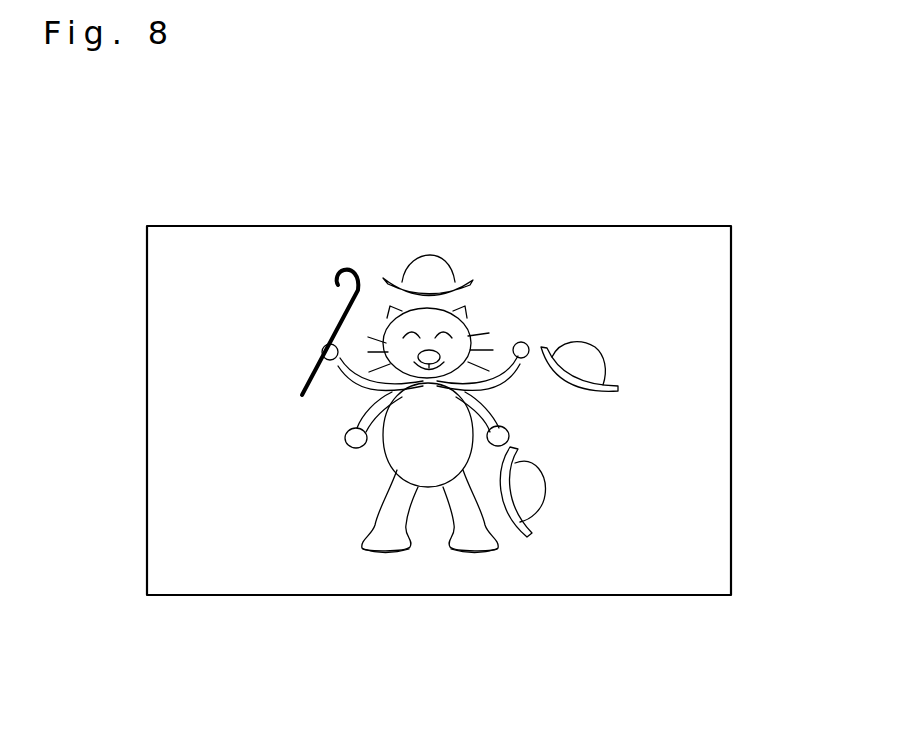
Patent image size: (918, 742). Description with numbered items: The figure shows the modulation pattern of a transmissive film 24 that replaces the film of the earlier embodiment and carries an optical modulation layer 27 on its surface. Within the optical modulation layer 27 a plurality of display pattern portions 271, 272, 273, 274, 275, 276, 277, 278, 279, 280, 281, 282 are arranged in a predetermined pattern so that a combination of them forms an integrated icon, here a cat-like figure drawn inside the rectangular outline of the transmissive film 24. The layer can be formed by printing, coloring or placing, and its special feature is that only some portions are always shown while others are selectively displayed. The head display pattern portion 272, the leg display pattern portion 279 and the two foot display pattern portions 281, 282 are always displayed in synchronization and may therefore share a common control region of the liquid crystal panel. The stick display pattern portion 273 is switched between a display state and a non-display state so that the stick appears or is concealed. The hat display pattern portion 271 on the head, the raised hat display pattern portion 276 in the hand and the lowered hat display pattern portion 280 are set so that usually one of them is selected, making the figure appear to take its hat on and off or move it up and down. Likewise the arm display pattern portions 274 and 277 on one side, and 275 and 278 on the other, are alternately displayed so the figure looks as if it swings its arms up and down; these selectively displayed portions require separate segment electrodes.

The transmissive film 24 is at (731, 388).
The optical modulation layer 27 is at (472, 256).
The display pattern portion 271 is at (420, 253).
The display pattern portion 272 is at (477, 322).
The display pattern portion 273 is at (340, 306).
The display pattern portion 274 is at (357, 393).
The display pattern portion 275 is at (514, 347).
The display pattern portion 276 is at (610, 362).
The display pattern portion 277 is at (353, 443).
The display pattern portion 278 is at (510, 432).
The display pattern portion 279 is at (373, 460).
The display pattern portion 280 is at (550, 495).
The display pattern portion 281 is at (388, 553).
The display pattern portion 282 is at (463, 553).